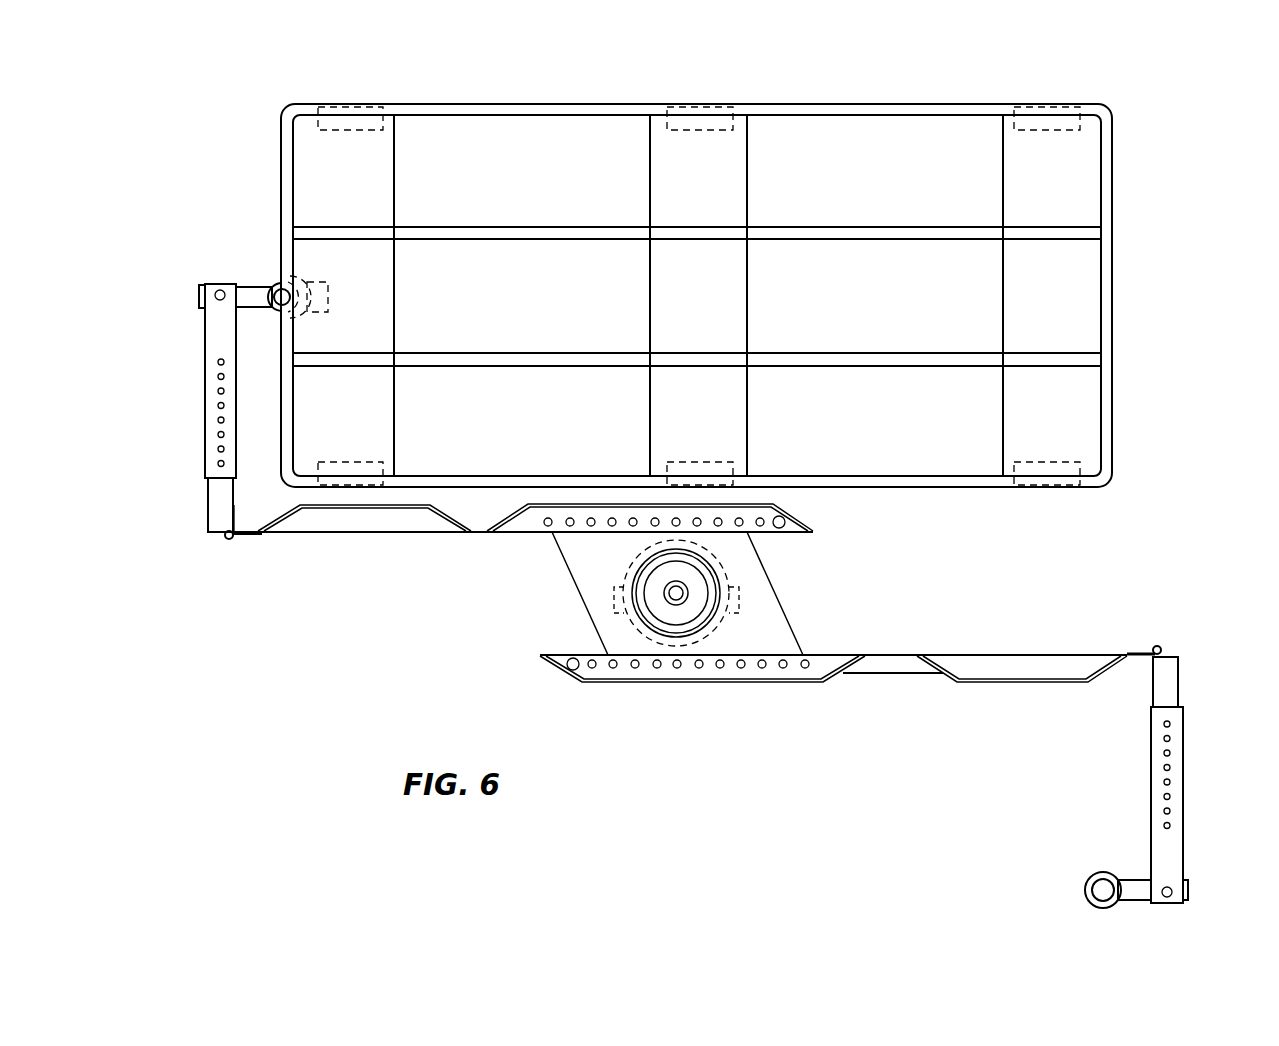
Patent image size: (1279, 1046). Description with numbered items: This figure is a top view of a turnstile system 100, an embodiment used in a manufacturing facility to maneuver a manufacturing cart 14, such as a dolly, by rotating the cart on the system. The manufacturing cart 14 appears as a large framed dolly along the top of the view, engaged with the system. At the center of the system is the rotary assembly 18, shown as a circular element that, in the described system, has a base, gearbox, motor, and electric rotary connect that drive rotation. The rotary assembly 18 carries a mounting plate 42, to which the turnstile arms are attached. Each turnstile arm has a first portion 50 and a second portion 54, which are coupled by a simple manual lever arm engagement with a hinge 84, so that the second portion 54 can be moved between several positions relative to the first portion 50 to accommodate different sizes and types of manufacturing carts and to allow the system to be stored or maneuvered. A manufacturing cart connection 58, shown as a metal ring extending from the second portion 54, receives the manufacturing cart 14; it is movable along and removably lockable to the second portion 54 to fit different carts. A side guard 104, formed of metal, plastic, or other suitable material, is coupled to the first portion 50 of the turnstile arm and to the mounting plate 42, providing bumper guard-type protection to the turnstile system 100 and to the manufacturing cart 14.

The turnstile system 100 is at (1145, 152).
The manufacturing cart 14 is at (1110, 358).
The rotary assembly 18 is at (750, 596).
The mounting plate 42 is at (578, 592).
The first portion 50 is at (892, 657).
The second portion 54 is at (1178, 765).
The manufacturing cart connection 58 is at (1097, 878).
The hinge 84 is at (1158, 646).
The side guard 104 is at (702, 683).